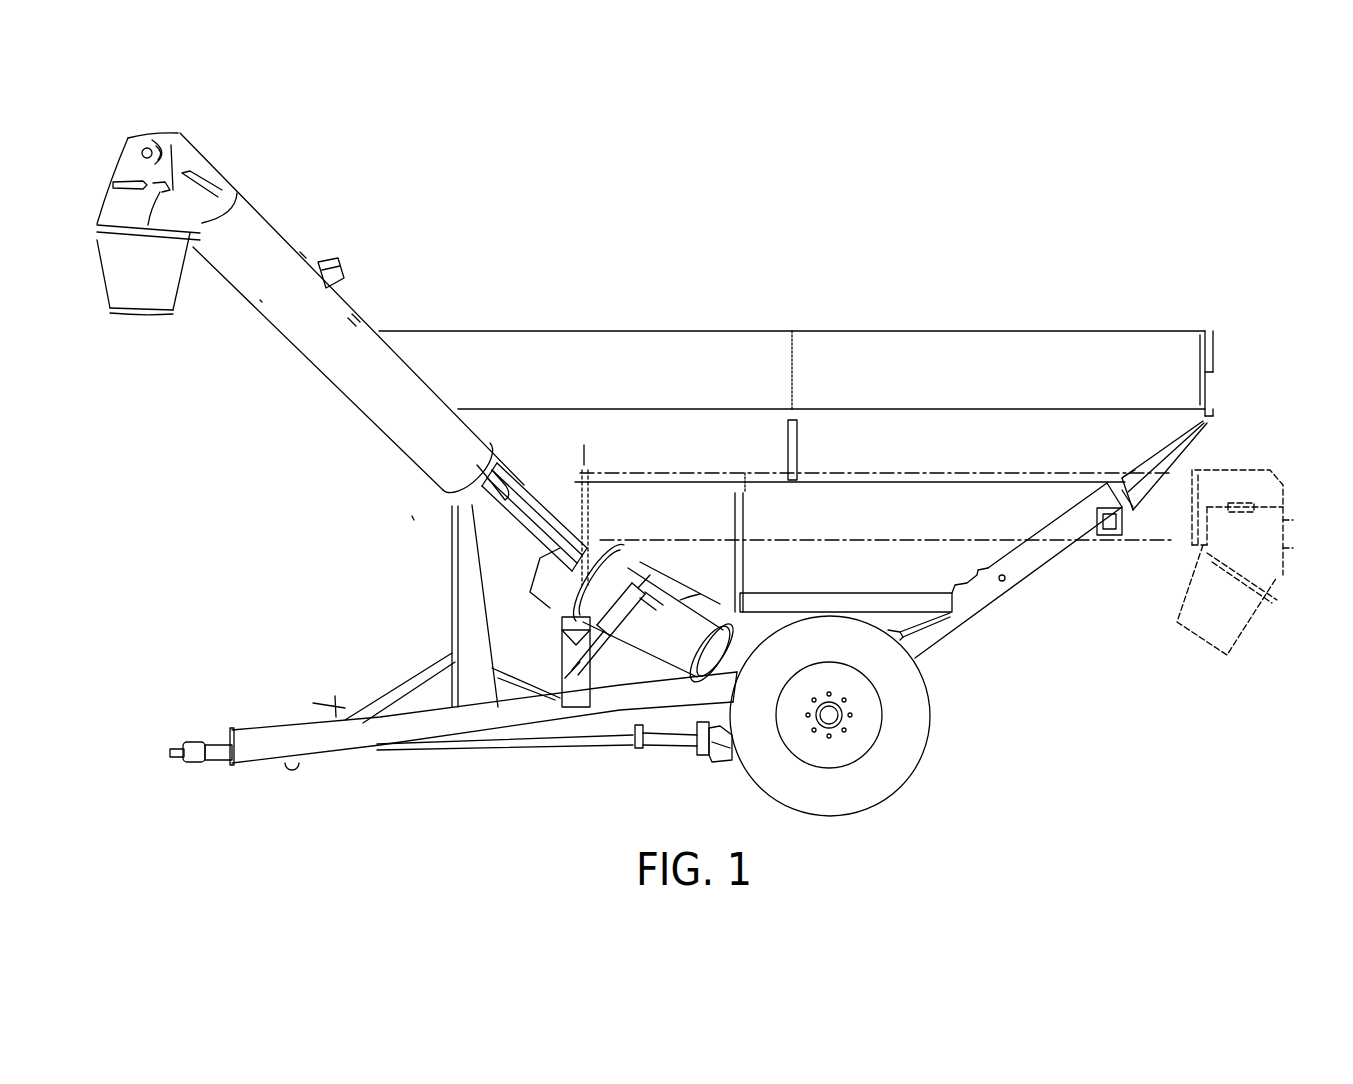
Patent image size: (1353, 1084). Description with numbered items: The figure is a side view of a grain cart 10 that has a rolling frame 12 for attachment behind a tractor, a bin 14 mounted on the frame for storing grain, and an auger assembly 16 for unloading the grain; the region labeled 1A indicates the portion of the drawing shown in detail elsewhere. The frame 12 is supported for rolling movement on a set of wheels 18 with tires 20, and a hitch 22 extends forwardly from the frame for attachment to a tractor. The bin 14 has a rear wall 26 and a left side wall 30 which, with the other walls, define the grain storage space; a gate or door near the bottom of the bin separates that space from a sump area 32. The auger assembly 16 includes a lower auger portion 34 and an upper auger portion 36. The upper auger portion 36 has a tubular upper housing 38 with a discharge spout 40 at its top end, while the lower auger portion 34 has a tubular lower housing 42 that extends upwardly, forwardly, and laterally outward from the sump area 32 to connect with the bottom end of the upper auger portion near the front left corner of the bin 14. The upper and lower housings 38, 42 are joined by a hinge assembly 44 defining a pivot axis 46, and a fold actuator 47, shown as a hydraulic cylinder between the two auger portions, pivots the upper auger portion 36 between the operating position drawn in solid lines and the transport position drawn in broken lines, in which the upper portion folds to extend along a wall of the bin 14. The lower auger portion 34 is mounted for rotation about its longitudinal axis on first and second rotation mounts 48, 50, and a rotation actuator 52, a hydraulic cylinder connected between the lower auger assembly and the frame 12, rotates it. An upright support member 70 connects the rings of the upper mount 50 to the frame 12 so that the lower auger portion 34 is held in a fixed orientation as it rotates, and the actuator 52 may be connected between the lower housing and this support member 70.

The grain cart 10 is at (1125, 288).
The rolling frame 12 is at (498, 738).
The bin 14 is at (1210, 328).
The auger assembly 16 is at (291, 202).
The wheels 18 is at (840, 767).
The tires 20 is at (930, 720).
The hitch 22 is at (187, 747).
The rear wall 26 is at (1208, 388).
The left side wall 30 is at (937, 440).
The sump area 32 is at (712, 760).
The lower auger portion 34 is at (655, 578).
The upper auger portion 36 is at (303, 252).
The tubular upper housing 38 is at (278, 332).
The discharge spout 40 is at (106, 212).
The tubular lower housing 42 is at (680, 600).
The hinge assembly 44 is at (568, 551).
The pivot axis 46 is at (585, 455).
The fold actuator 47 is at (527, 482).
The first rotation mount 48 is at (740, 611).
The second rotation mount 50 is at (617, 546).
The rotation actuator 52 is at (608, 652).
The support member 70 is at (568, 703).
The detail view region 1A is at (412, 518).